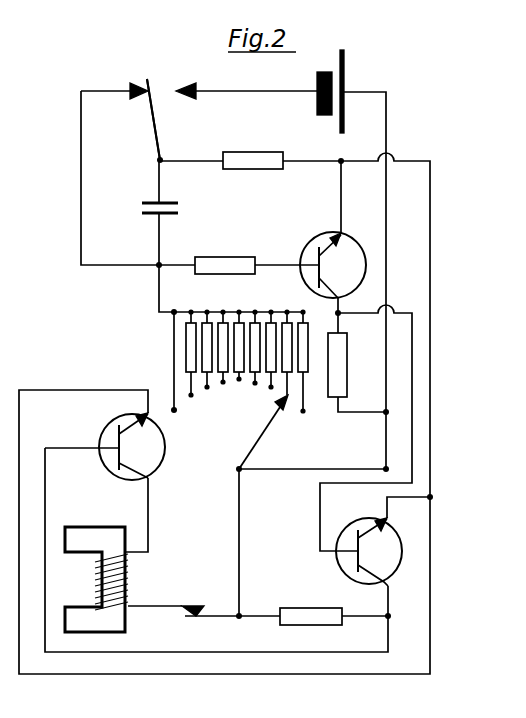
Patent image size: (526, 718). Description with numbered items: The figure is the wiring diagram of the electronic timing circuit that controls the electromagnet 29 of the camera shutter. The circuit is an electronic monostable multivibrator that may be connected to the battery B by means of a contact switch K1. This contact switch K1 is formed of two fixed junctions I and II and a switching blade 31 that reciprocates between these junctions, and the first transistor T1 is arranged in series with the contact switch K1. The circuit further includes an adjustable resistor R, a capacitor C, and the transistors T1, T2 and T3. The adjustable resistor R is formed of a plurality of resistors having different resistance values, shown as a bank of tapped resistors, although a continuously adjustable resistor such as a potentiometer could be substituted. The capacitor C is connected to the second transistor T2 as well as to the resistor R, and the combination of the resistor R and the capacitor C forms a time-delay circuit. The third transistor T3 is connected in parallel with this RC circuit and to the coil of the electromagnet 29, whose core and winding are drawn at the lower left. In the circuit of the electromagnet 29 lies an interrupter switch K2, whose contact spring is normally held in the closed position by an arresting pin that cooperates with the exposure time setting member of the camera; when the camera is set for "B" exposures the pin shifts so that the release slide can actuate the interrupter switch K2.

The fixed junction I is at (139, 80).
The fixed junction II is at (186, 80).
The switching blade 31 is at (152, 128).
The contact switch K1 is at (164, 96).
The battery B is at (335, 100).
The capacitor C is at (168, 212).
The second transistor T2 is at (324, 263).
The adjustable resistor R is at (247, 389).
The third transistor T3 is at (141, 446).
The first transistor T1 is at (374, 551).
The electromagnet 29 is at (112, 618).
The interrupter switch K2 is at (201, 606).